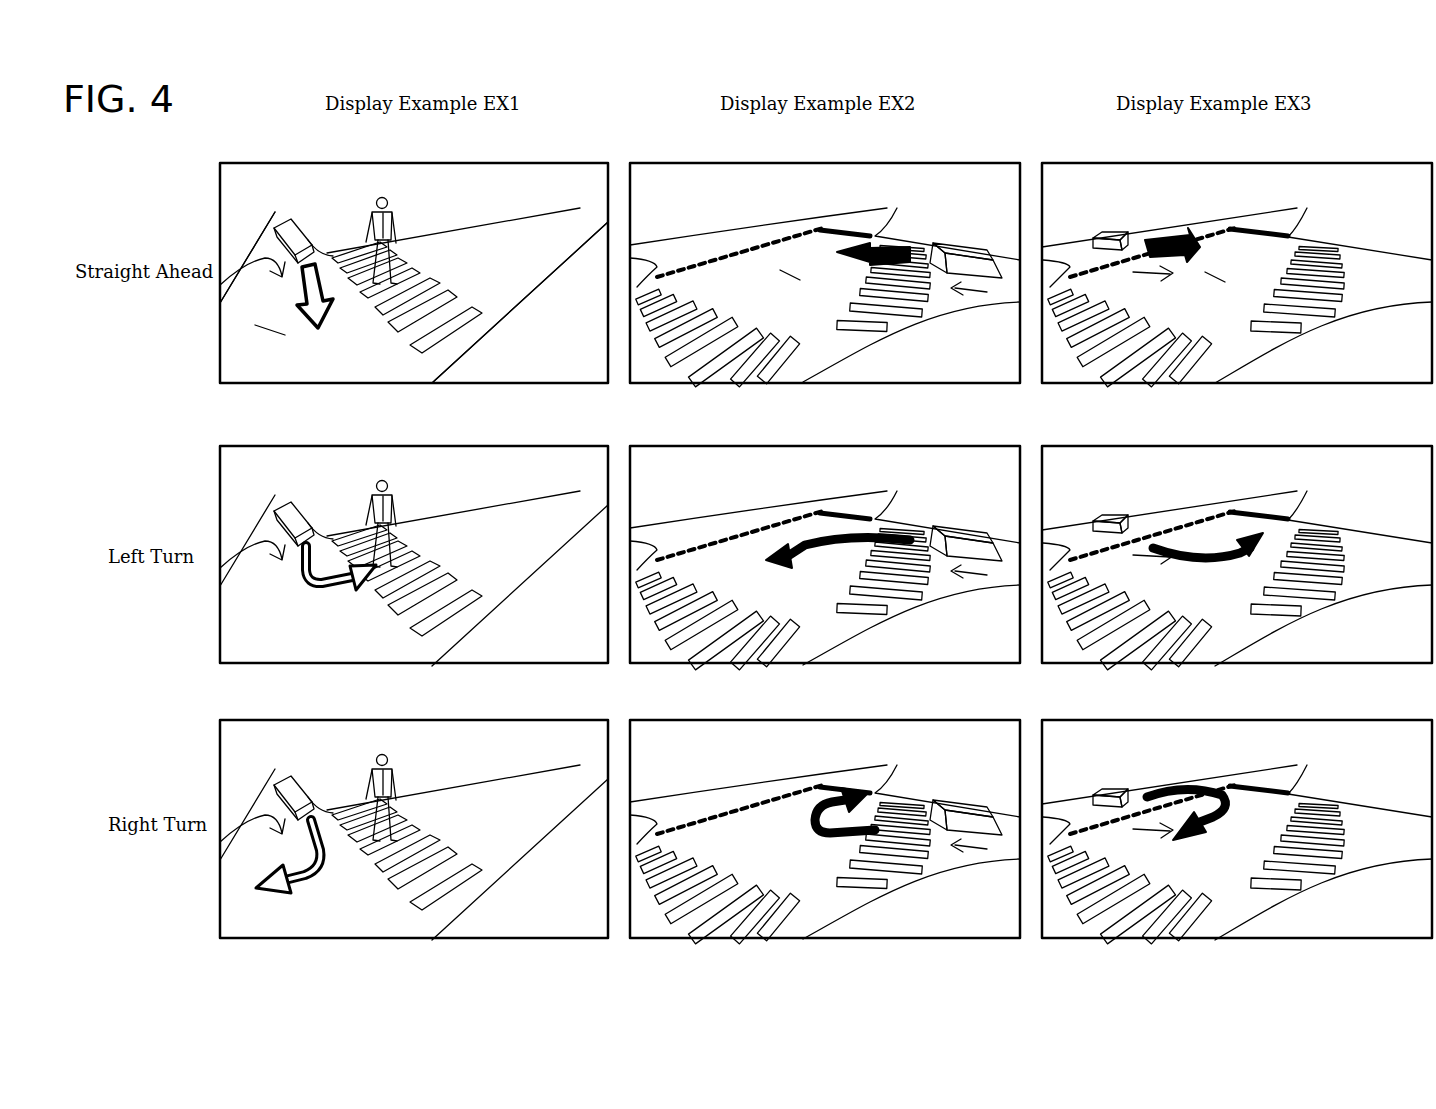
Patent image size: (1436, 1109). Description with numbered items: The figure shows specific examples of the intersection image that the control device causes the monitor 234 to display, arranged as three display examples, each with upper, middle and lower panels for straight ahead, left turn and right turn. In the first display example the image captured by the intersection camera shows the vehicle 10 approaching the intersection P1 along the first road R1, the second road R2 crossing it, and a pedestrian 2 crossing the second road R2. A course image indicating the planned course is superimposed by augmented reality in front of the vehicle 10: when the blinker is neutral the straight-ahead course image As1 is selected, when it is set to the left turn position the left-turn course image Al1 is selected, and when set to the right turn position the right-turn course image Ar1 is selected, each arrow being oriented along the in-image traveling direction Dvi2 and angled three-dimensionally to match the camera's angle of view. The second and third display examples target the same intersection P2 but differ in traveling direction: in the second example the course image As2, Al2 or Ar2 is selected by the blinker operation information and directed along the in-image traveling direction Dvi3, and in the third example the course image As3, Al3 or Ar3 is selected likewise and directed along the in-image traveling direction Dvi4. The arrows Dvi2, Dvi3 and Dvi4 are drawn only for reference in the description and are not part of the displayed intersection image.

The vehicle 10 is at (292, 222).
The pedestrian 2 is at (374, 194).
The monitor 234 is at (455, 163).
The first road R1 is at (275, 212).
The second road R2 is at (531, 257).
The intersection P1 is at (268, 330).
The intersection P2 is at (787, 278).
The course image indicating the straight ahead As1 is at (331, 310).
The course image indicating the straight ahead As2 is at (851, 243).
The course image indicating the straight ahead As3 is at (1182, 238).
The course image indicating the left turn Al1 is at (341, 590).
The course image indicating the left turn Al2 is at (792, 545).
The course image indicating the left turn Al3 is at (1200, 540).
The course image indicating the right turn Ar1 is at (318, 872).
The course image indicating the right turn Ar2 is at (843, 780).
The course image indicating the right turn Ar3 is at (1200, 795).
The in-image traveling direction Dvi2 is at (220, 303).
The in-image traveling direction Dvi3 is at (973, 292).
The in-image traveling direction Dvi4 is at (1143, 274).